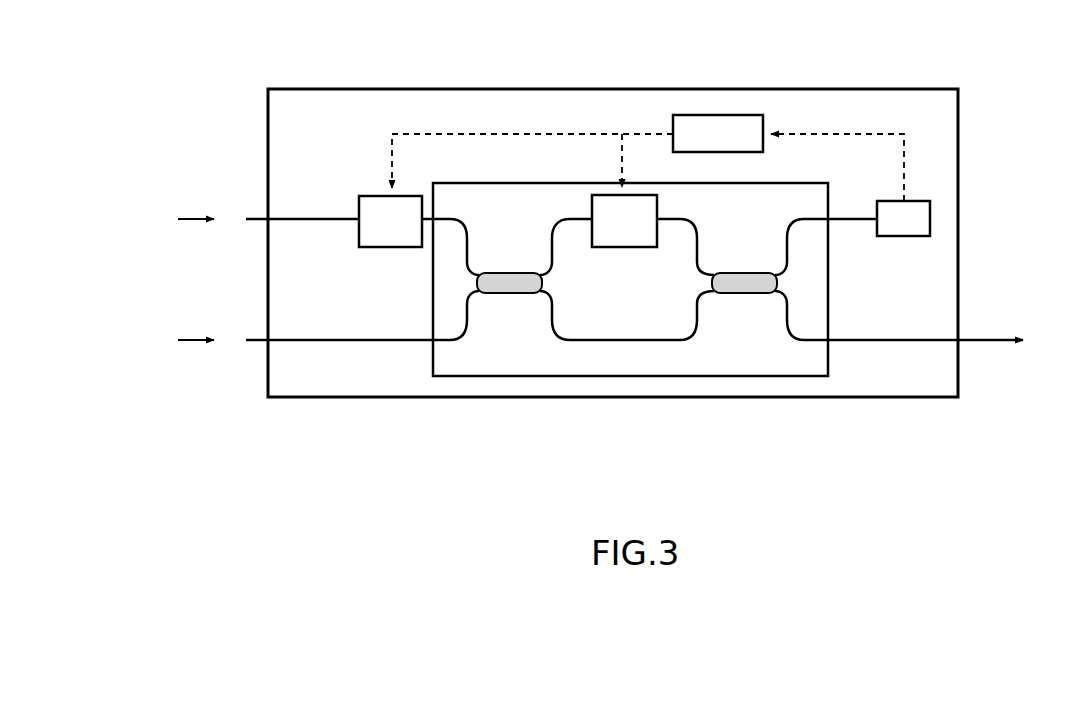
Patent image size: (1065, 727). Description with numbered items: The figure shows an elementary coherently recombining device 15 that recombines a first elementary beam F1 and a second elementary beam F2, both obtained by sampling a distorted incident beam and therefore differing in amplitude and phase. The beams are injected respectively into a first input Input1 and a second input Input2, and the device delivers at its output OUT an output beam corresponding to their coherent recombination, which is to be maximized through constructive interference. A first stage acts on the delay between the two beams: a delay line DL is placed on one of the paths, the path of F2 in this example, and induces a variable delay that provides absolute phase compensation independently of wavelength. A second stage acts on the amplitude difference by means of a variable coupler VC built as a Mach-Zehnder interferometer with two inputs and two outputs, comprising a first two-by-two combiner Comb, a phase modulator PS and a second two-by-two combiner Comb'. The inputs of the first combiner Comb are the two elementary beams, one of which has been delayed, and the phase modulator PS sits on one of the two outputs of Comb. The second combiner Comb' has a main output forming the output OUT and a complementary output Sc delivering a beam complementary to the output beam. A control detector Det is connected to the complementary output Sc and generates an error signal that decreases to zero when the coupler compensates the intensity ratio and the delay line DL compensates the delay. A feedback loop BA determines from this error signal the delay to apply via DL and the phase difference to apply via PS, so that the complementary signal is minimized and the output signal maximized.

The elementary coherently recombining device 15 is at (509, 89).
The first input Input1 is at (253, 205).
The second input Input2 is at (256, 355).
The first elementary beam F1 is at (190, 218).
The second elementary beam F2 is at (190, 339).
The delay line DL is at (390, 221).
The phase modulator PS is at (624, 221).
The feedback loop BA is at (577, 151).
The control detector Det is at (903, 218).
The complementary output Sc is at (841, 208).
The variable coupler VC is at (578, 377).
The first 2x2 combiner Comb is at (509, 263).
The second 2x2 combiner Comb' is at (743, 263).
The output OUT is at (970, 355).